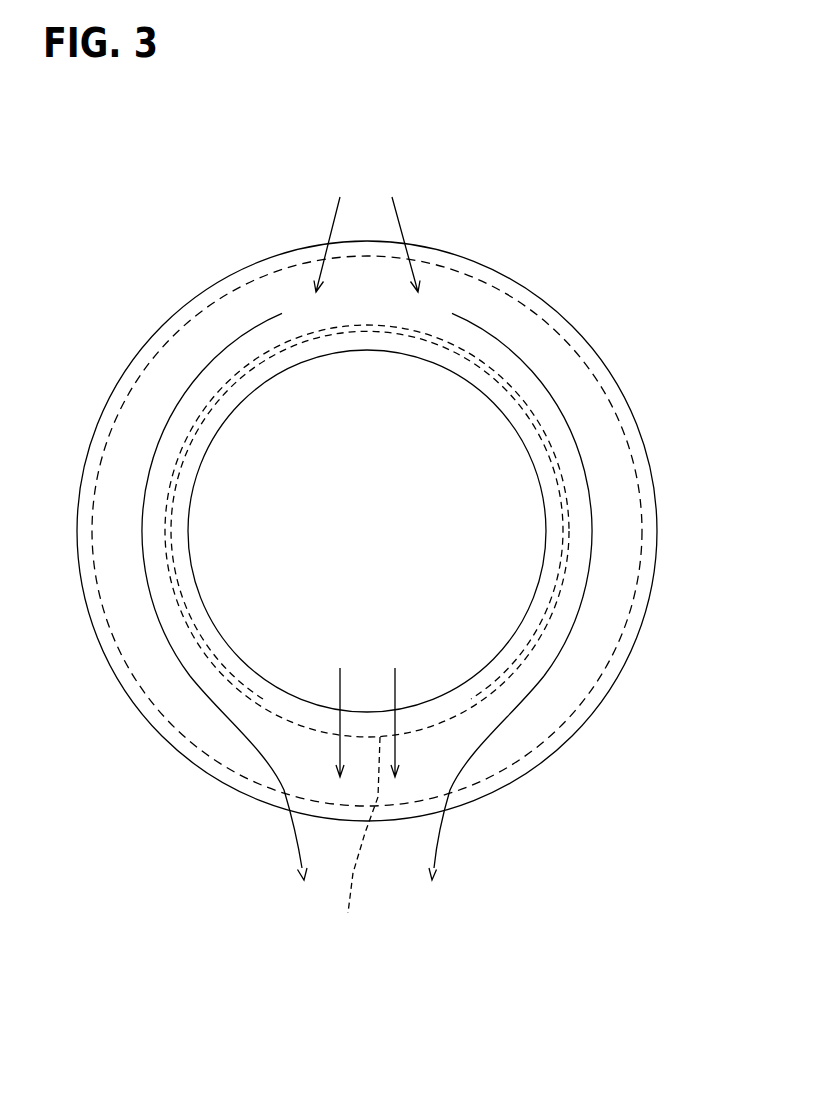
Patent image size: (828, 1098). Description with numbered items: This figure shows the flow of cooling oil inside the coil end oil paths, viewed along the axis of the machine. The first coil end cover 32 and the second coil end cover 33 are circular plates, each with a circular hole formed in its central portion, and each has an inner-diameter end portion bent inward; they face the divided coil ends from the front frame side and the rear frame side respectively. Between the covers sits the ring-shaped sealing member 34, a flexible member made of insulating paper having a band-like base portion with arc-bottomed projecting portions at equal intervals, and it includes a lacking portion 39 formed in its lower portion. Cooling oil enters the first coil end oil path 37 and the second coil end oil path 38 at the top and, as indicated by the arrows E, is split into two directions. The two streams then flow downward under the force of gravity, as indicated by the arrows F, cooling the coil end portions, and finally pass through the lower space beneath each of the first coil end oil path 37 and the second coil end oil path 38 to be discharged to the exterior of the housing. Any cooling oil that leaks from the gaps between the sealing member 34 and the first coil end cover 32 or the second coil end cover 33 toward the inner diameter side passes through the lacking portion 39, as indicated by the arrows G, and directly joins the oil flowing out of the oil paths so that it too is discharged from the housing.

The first coil end cover 32 is at (434, 512).
The second coil end cover 33 is at (367, 531).
The sealing member 34 is at (567, 488).
The first coil end oil path 37 is at (377, 531).
The second coil end oil path 38 is at (522, 320).
The lacking portion 39 is at (357, 840).
The arrows E is at (335, 218).
The arrows F is at (190, 676).
The arrows G is at (340, 688).